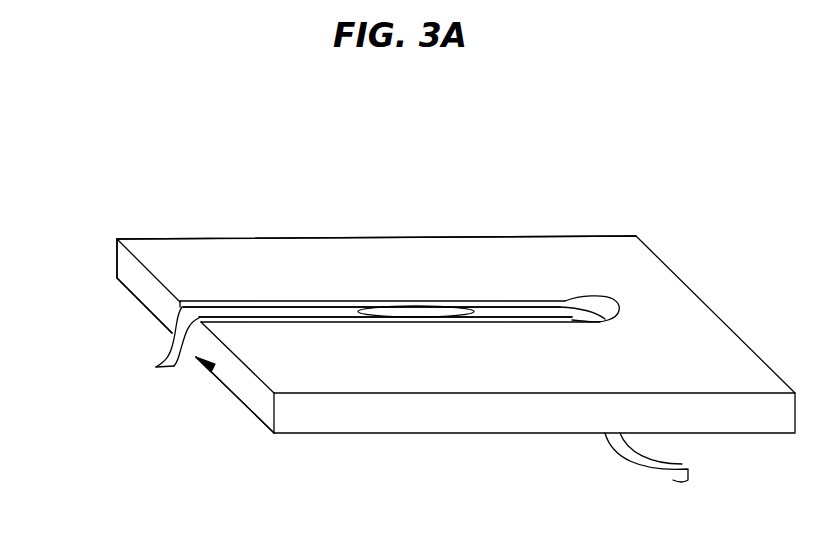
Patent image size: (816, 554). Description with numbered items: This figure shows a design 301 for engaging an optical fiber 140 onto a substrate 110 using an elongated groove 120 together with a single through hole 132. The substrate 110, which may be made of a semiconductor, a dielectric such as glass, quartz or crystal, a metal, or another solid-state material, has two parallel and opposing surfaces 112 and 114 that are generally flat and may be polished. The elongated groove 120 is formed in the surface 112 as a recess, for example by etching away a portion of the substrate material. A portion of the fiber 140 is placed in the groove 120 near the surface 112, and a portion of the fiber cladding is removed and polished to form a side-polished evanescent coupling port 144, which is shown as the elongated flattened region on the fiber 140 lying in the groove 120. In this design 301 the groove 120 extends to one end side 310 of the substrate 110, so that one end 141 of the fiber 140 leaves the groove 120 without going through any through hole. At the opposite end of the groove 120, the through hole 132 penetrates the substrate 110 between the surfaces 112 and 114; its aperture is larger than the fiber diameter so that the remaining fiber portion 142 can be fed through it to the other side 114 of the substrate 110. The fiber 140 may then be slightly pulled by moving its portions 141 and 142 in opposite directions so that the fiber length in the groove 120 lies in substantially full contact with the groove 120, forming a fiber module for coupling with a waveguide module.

The design 301 is at (595, 178).
The substrate 110 is at (113, 258).
The substrate surface 112 is at (155, 258).
The substrate surface 114 is at (137, 302).
The elongated groove 120 is at (345, 300).
The fiber 140 is at (537, 312).
The sensing element 144 is at (415, 302).
The through hole 132 is at (620, 317).
The fiber portion 141 is at (160, 353).
The fiber portion 142 is at (675, 480).
The end side 310 is at (203, 366).